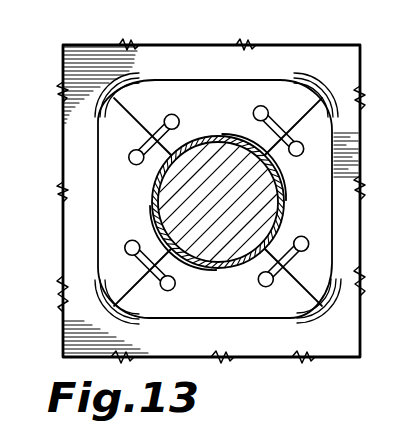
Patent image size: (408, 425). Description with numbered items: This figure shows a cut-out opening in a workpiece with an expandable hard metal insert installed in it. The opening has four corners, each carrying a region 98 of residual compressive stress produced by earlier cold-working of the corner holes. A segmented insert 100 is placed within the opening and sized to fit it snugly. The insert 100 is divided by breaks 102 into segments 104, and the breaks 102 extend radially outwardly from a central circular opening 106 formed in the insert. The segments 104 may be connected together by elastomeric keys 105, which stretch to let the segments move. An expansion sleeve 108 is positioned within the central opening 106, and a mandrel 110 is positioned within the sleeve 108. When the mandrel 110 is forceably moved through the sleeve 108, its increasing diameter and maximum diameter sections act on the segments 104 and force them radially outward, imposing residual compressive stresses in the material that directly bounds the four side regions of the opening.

The region of residual compressive stress 98 is at (63, 86).
The segmented insert 100 is at (120, 227).
The breaks 102 is at (100, 121).
The segments 104 is at (237, 68).
The elastomeric keys 105 is at (168, 115).
The central circular opening 106 is at (241, 138).
The expansion sleeve 108 is at (158, 176).
The mandrel 110 is at (333, 182).